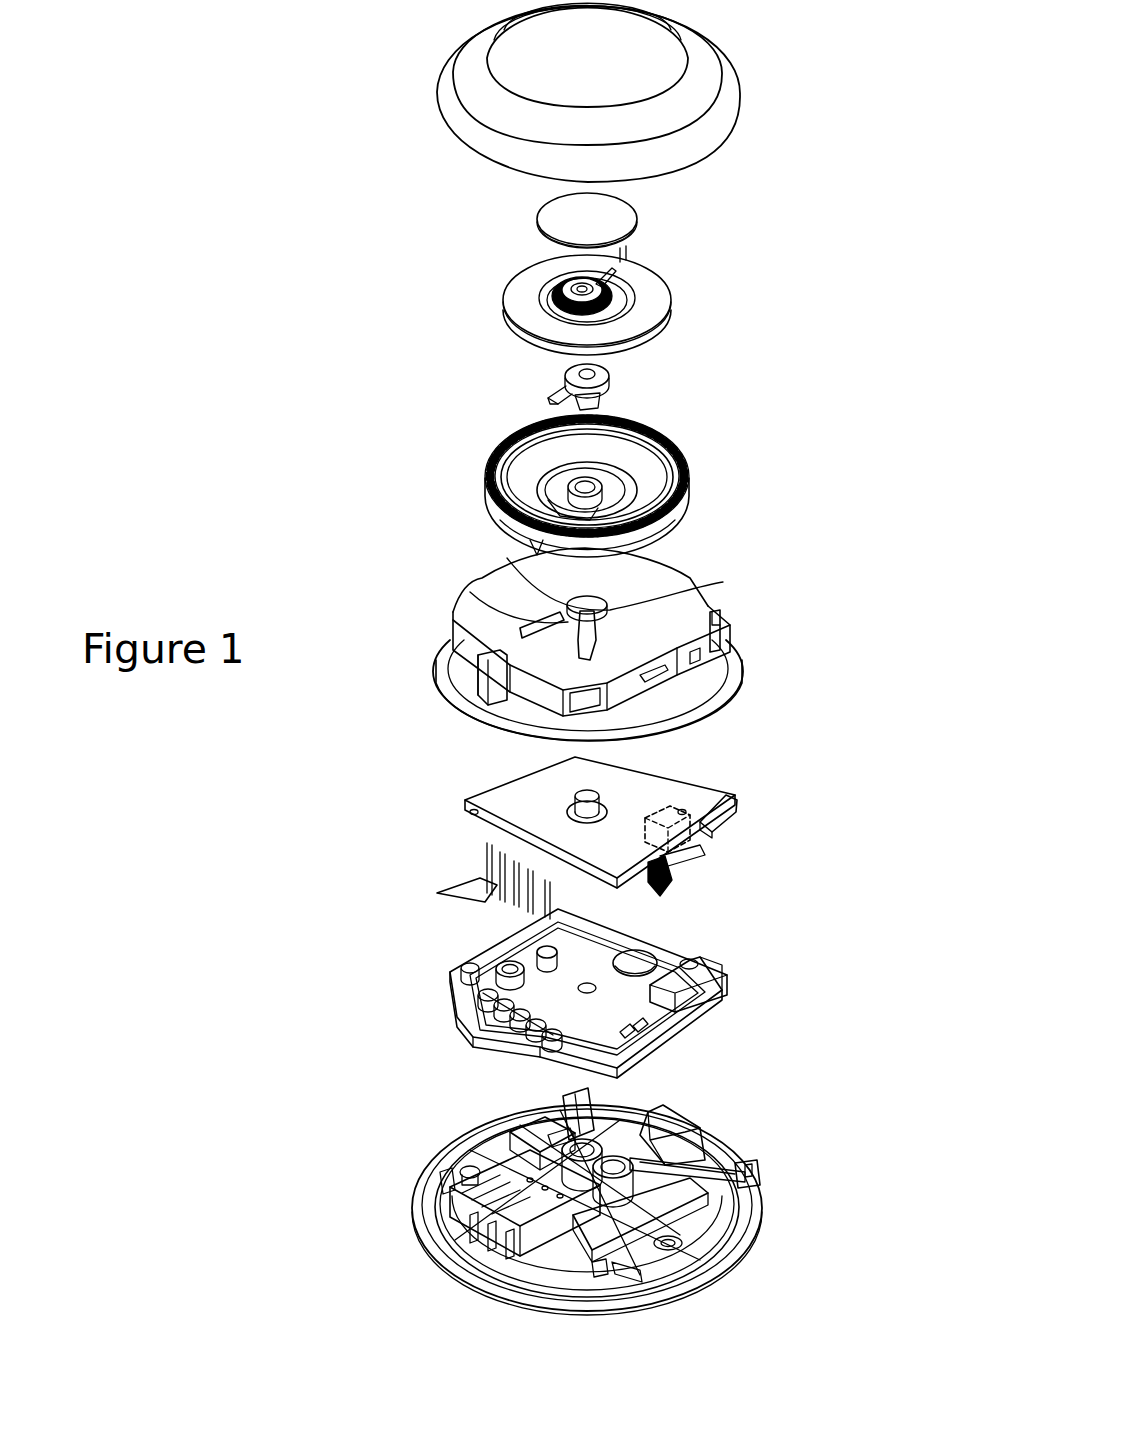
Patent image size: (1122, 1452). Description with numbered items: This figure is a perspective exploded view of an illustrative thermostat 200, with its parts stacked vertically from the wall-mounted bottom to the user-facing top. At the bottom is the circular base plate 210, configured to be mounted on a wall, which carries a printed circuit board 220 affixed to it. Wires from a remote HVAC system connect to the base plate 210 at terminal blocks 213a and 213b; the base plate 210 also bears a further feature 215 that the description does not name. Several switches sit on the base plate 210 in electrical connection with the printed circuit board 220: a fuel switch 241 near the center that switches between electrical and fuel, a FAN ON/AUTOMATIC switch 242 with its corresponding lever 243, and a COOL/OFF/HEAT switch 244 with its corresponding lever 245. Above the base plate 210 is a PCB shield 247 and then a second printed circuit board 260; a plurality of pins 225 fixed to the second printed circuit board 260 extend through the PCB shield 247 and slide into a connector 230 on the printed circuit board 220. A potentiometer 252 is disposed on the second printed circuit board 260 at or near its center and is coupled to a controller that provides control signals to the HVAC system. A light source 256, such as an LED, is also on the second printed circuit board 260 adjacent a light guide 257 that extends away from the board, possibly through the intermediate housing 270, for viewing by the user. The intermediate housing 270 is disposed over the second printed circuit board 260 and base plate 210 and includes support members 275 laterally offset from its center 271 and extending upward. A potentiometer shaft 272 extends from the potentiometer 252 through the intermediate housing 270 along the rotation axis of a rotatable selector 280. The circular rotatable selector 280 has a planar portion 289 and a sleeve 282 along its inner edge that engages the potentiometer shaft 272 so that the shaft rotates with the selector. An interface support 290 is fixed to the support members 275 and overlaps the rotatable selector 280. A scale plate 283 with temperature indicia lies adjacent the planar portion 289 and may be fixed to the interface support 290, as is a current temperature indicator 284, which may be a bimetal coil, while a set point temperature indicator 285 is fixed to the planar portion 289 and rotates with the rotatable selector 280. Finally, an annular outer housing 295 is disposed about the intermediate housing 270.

The thermostat 200 is at (758, 164).
The outer housing 295 is at (452, 93).
The scale plate 283 is at (650, 293).
The current temperature indicator 284 is at (608, 272).
The interface support 290 is at (558, 393).
The rotatable selector 280 is at (585, 465).
The planar portion 289 is at (650, 470).
The set point temperature indicator 285 is at (505, 503).
The sleeve 282 is at (600, 482).
The intermediate housing 270 is at (563, 637).
The center 271 is at (582, 598).
The support members 275 is at (522, 632).
The second printed circuit board 260 is at (595, 837).
The potentiometer shaft 272 is at (608, 800).
The potentiometer 252 is at (568, 808).
The pins 225 is at (470, 888).
The light source 256 is at (690, 850).
The light guide 257 is at (738, 800).
The PCB shield 247 is at (688, 1010).
The base plate 210 is at (591, 1206).
The printed circuit board 220 is at (502, 1290).
The lever 245 is at (560, 1094).
The COOL/OFF/HEAT switch 244 is at (535, 1137).
The connector 230 is at (455, 1215).
The FAN ON/AUTOMATIC switch 242 is at (705, 1215).
The fuel switch 241 is at (690, 1130).
The lever 243 is at (750, 1170).
The terminal block 213a is at (452, 1170).
The terminal block 213b is at (640, 1272).
The posts 215 is at (440, 1175).